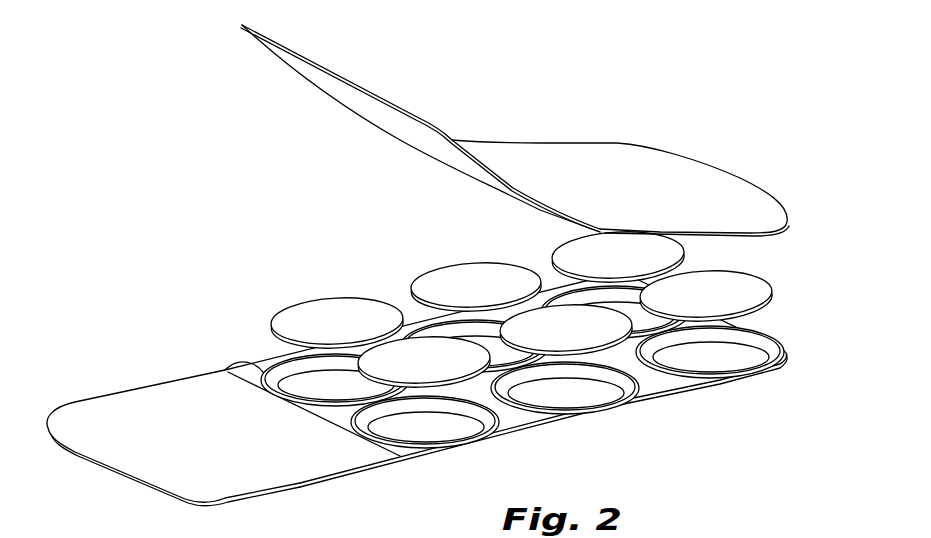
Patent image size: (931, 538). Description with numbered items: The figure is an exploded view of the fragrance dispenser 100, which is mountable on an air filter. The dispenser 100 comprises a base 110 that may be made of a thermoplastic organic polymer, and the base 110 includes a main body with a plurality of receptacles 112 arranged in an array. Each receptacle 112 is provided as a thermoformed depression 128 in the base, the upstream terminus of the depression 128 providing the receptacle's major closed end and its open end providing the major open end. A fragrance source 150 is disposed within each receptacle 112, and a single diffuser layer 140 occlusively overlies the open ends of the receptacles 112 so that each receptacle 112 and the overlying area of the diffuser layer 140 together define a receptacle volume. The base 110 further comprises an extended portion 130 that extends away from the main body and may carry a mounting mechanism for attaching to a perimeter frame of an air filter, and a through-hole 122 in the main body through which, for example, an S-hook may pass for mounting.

The fragrance dispenser 100 is at (422, 266).
The base 110 is at (418, 445).
The receptacle 112 is at (727, 370).
The through-hole 122 is at (242, 372).
The thermoformed depression 128 is at (720, 383).
The extended portion 130 is at (153, 397).
The diffuser layer 140 is at (550, 155).
The fragrance source 150 is at (368, 312).